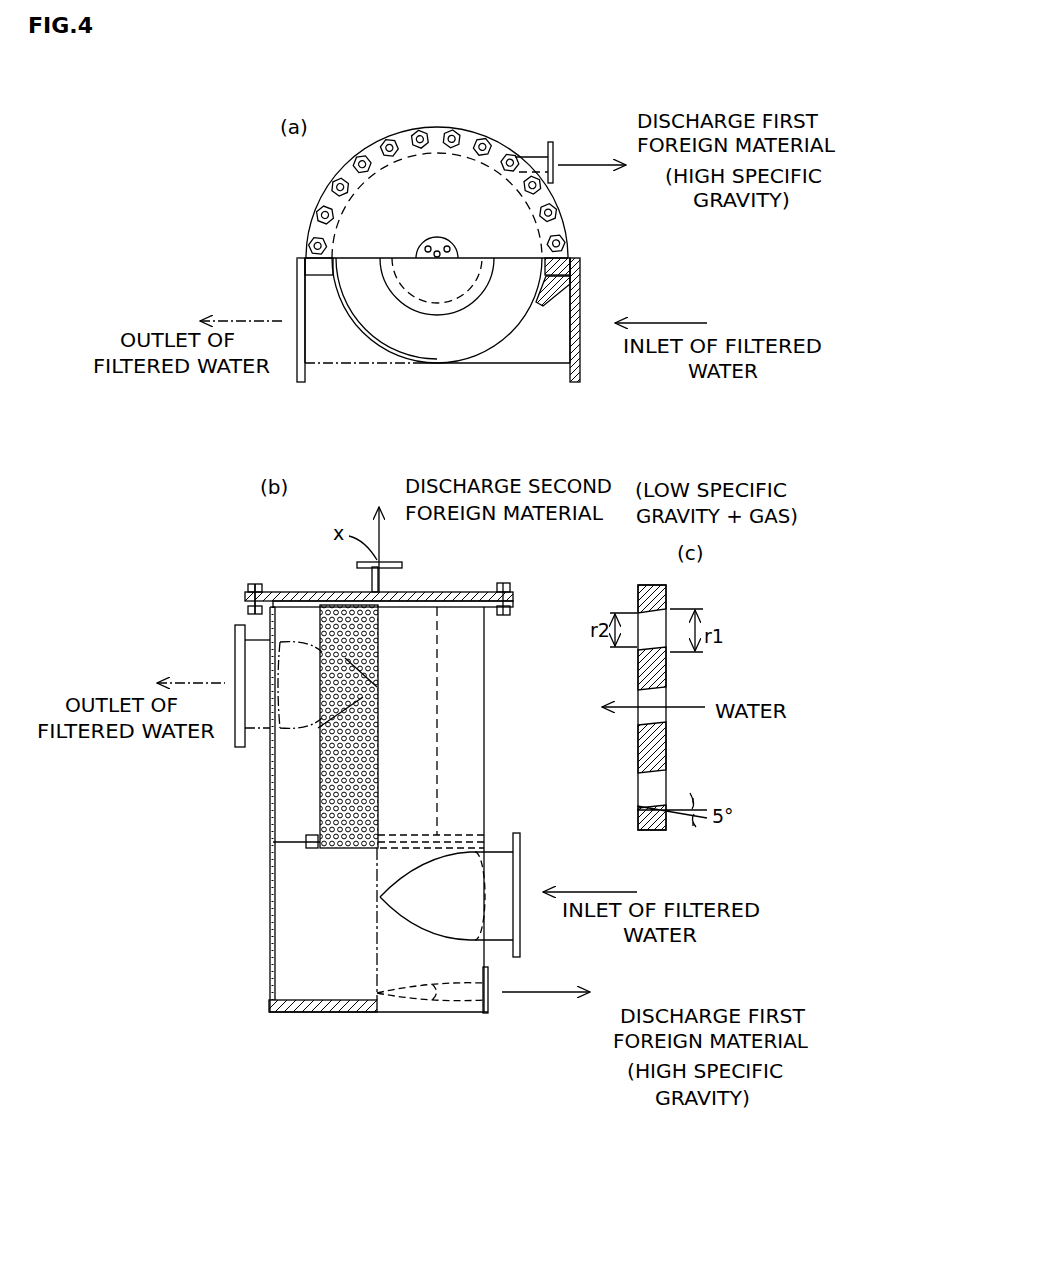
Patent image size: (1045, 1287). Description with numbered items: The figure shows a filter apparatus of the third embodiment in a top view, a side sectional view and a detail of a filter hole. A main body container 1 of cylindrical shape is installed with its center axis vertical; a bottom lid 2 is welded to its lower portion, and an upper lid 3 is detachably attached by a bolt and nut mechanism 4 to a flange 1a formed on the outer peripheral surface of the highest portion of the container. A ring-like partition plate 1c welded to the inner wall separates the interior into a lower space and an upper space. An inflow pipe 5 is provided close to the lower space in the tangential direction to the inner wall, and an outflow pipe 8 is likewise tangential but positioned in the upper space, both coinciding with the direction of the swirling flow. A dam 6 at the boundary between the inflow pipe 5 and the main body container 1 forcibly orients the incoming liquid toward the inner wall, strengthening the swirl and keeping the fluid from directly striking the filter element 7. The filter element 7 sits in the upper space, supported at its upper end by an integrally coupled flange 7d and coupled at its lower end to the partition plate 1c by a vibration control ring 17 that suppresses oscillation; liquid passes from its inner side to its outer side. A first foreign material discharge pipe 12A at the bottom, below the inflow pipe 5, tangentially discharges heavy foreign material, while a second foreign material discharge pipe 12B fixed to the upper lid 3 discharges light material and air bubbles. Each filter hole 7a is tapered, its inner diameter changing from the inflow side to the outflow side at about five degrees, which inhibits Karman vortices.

The main body container 1 is at (488, 712).
The flange 1a is at (513, 605).
The partition plate 1c is at (422, 345).
The bottom lid 2 is at (323, 1013).
The upper lid 3 is at (324, 197).
The bolt and nut mechanism 4 is at (571, 242).
The inflow pipe 5 is at (586, 352).
The dam 6 is at (548, 294).
The filter element 7 is at (472, 287).
The filter hole 7a is at (378, 765).
The flange 7d is at (270, 592).
The outflow pipe 8 is at (333, 367).
The first foreign material discharge pipe 12A is at (538, 155).
The second foreign material discharge pipe 12B is at (445, 237).
The vibration control ring 17 is at (402, 297).